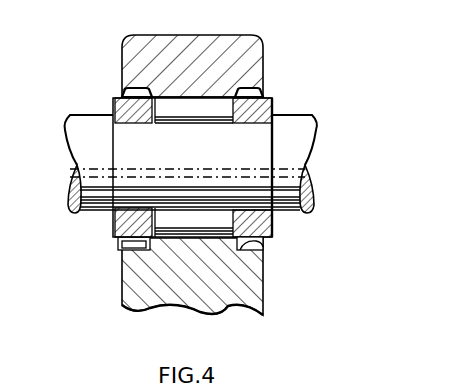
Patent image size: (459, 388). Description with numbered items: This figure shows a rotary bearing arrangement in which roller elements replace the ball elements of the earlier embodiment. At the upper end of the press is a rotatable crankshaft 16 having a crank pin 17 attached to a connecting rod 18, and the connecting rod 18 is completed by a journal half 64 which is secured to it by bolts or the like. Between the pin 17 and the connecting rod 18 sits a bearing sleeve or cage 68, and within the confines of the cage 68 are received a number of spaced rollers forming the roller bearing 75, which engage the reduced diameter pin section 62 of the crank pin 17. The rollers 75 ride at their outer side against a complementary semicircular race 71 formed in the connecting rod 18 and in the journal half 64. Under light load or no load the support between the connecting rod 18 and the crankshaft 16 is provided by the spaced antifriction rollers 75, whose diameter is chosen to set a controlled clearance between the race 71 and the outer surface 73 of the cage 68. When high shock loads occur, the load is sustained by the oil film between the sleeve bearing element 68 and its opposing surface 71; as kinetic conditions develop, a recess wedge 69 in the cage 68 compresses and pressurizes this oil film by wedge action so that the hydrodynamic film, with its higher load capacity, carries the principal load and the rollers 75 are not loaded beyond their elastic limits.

The crankshaft 16 is at (87, 111).
The crank pin 17 is at (67, 175).
The connecting rod 18 is at (133, 268).
The reduced diameter pin section 62 is at (260, 147).
The journal half 64 is at (168, 47).
The bearing sleeve or cage 68 is at (205, 112).
The recess wedge 69 is at (126, 89).
The semicircular race 71 is at (145, 240).
The outer surface of the cage 73 is at (122, 236).
The roller bearing 75 is at (240, 73).